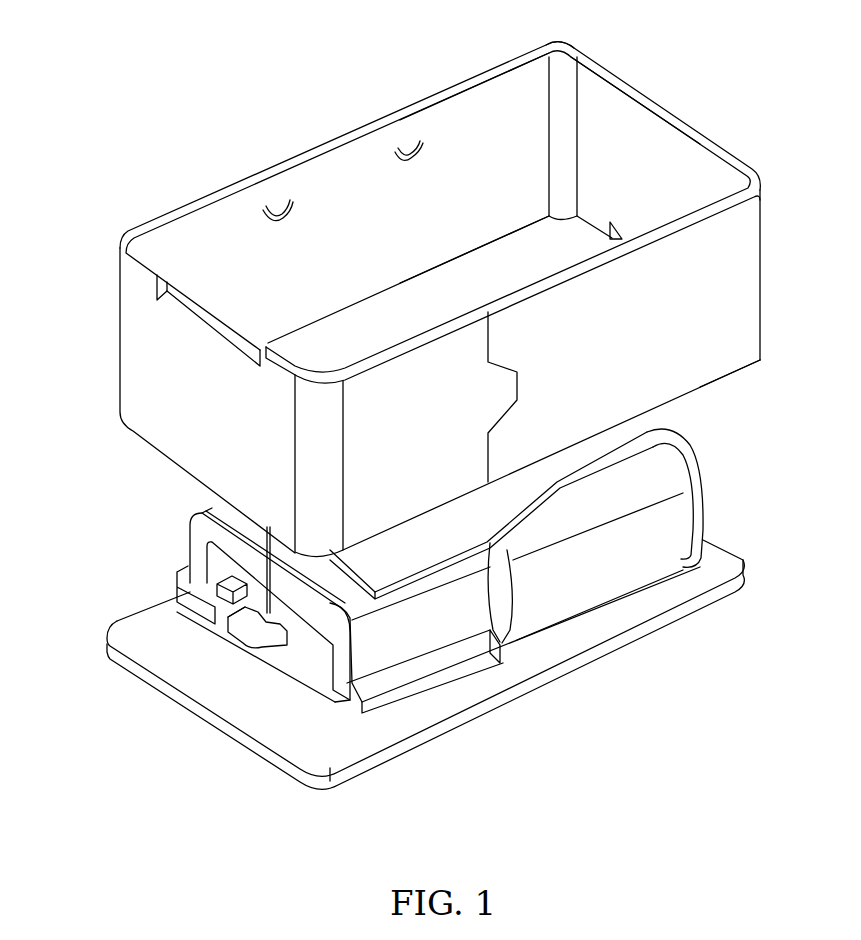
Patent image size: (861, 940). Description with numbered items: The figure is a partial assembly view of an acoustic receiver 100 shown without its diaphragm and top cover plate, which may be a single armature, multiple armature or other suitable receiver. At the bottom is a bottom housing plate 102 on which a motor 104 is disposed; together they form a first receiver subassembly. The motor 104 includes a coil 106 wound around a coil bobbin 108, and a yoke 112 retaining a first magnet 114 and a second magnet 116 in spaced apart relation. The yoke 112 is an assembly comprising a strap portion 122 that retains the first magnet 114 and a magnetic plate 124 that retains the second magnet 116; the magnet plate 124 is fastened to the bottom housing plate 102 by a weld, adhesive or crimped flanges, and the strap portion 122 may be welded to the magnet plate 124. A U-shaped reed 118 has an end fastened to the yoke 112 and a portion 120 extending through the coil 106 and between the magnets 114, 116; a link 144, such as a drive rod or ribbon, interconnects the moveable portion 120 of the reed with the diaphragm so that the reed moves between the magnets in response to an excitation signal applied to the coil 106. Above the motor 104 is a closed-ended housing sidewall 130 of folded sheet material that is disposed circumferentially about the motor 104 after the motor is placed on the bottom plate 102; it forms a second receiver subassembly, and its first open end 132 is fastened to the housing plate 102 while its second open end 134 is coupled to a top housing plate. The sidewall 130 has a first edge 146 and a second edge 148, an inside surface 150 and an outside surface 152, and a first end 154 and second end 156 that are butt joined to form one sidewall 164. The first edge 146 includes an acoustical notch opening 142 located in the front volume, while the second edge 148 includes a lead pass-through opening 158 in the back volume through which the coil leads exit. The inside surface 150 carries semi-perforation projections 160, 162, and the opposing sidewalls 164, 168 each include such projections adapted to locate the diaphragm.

The acoustic receiver 100 is at (103, 93).
The bottom housing plate 102 is at (637, 617).
The motor 104 is at (708, 449).
The coil 106 is at (647, 550).
The coil bobbin 108 is at (687, 493).
The bracket 112 is at (180, 537).
The first magnet 114 is at (250, 572).
The second magnet 116 is at (267, 677).
The reed 118 is at (397, 540).
The moveable portion of the reed 120 is at (250, 627).
The strap portion 122 is at (223, 517).
The magnetic plate 124 is at (313, 680).
The closed-ended housing sidewall 130 is at (740, 263).
The first open end 132 is at (535, 238).
The second open end 134 is at (360, 186).
The acoustical notch opening 142 is at (173, 308).
The link 144 is at (247, 605).
The first edge 146 is at (532, 50).
The second edge 148 is at (745, 364).
The inside surface 150 is at (505, 105).
The outside surface 152 is at (747, 215).
The first end 154 is at (480, 408).
The second end 156 is at (582, 388).
The lead pass-through opening 158 is at (623, 233).
The semi-perforation 160 is at (278, 213).
The semi-perforation 162 is at (394, 148).
The sidewall 164 is at (355, 277).
The sidewall 168 is at (446, 122).